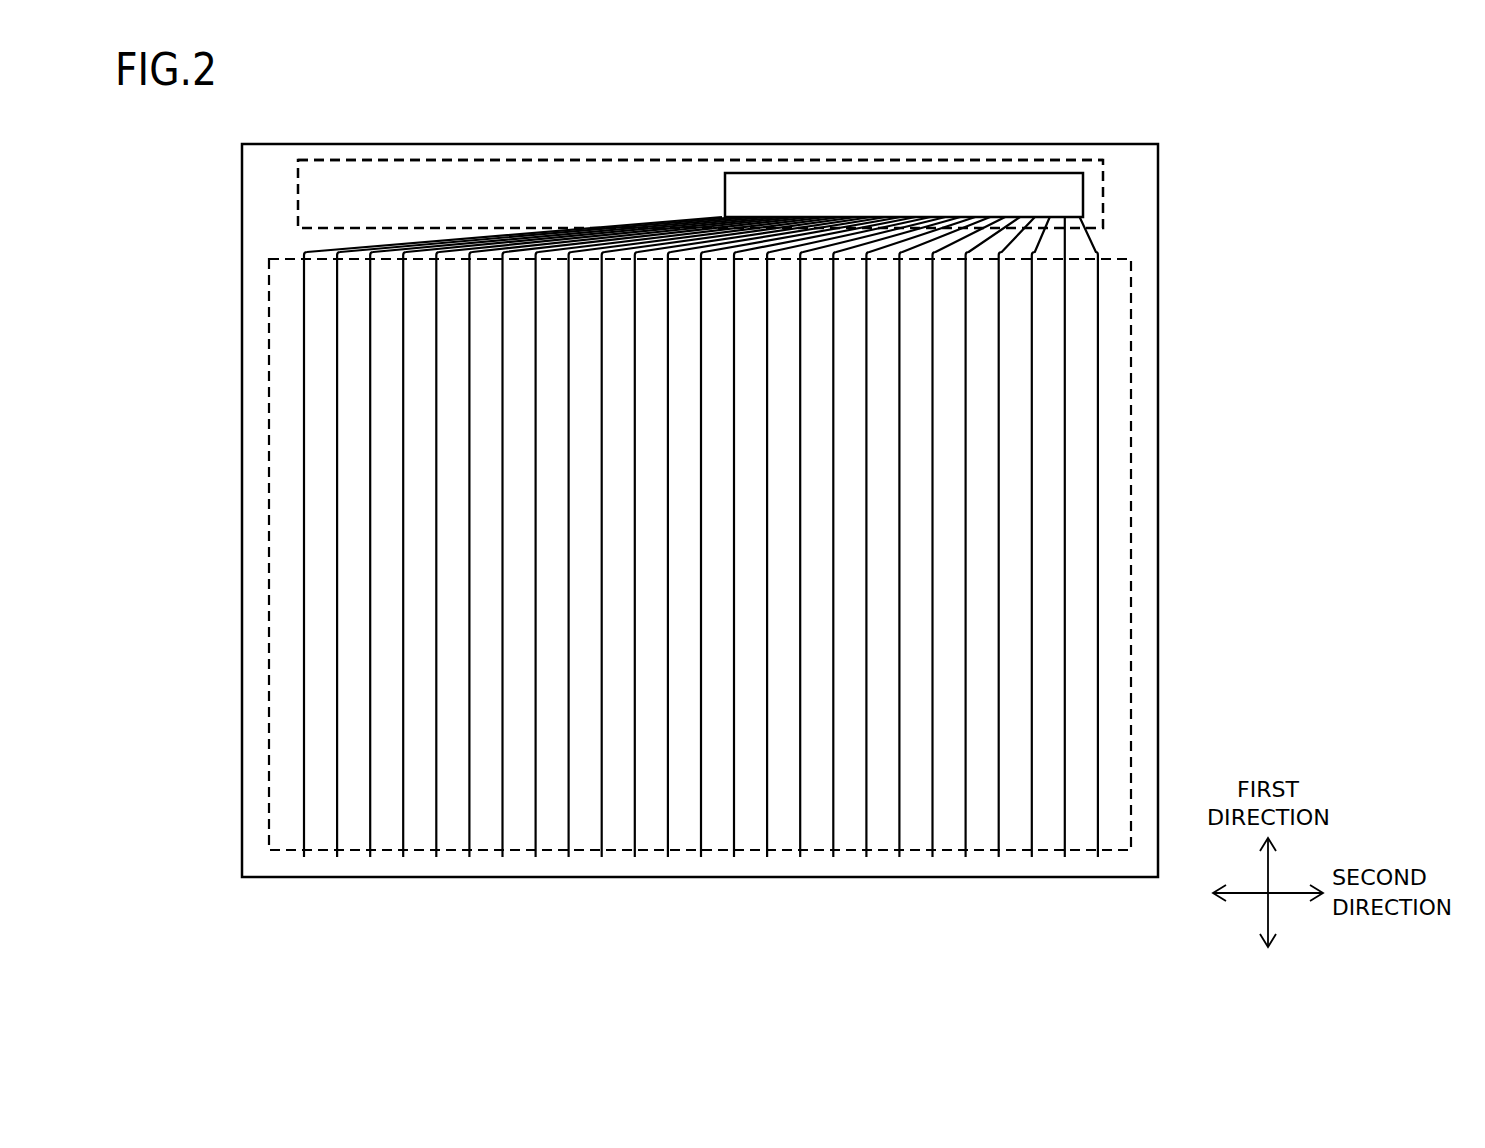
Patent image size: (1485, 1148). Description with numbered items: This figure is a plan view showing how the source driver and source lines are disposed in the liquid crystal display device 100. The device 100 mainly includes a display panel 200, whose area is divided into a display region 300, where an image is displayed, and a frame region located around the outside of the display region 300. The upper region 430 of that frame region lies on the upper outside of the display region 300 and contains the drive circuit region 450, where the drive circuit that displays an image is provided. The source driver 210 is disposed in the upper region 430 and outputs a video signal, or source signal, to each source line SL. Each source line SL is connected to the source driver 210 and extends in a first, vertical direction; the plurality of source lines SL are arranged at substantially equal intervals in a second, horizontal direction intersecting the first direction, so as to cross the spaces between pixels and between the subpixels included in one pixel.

The liquid crystal display device 100 is at (1212, 128).
The display panel 200 is at (1158, 343).
The display region 300 is at (1131, 465).
The upper region 430 is at (696, 152).
The drive circuit region 450 is at (877, 162).
The source driver 210 is at (1002, 173).
The source line SL is at (1098, 538).